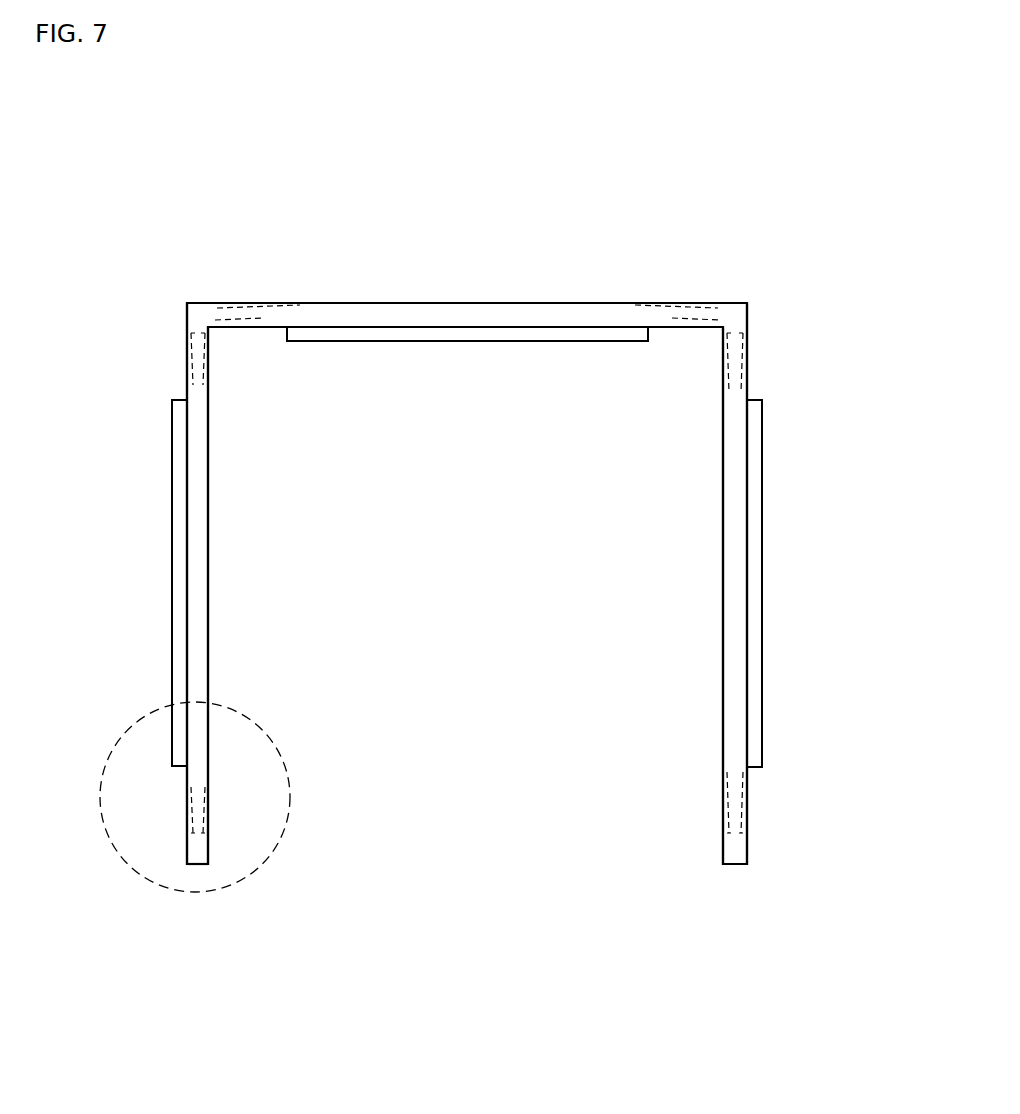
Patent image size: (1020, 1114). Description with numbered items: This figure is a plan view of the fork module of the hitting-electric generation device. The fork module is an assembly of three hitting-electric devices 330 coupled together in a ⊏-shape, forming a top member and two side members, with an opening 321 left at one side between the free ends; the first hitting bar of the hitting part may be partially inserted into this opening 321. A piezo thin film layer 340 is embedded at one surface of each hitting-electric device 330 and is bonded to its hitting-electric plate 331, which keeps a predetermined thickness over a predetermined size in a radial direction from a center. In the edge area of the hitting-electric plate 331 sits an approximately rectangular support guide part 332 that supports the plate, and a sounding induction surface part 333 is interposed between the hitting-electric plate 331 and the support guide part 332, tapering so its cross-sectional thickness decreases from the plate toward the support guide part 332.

The opening 321 is at (578, 738).
The hitting-electric device 330 is at (697, 303).
The hitting-electric plate 331 is at (198, 722).
The support guide part 332 is at (207, 852).
The sounding induction surface part 333 is at (203, 818).
The piezo thin film layer 340 is at (527, 341).